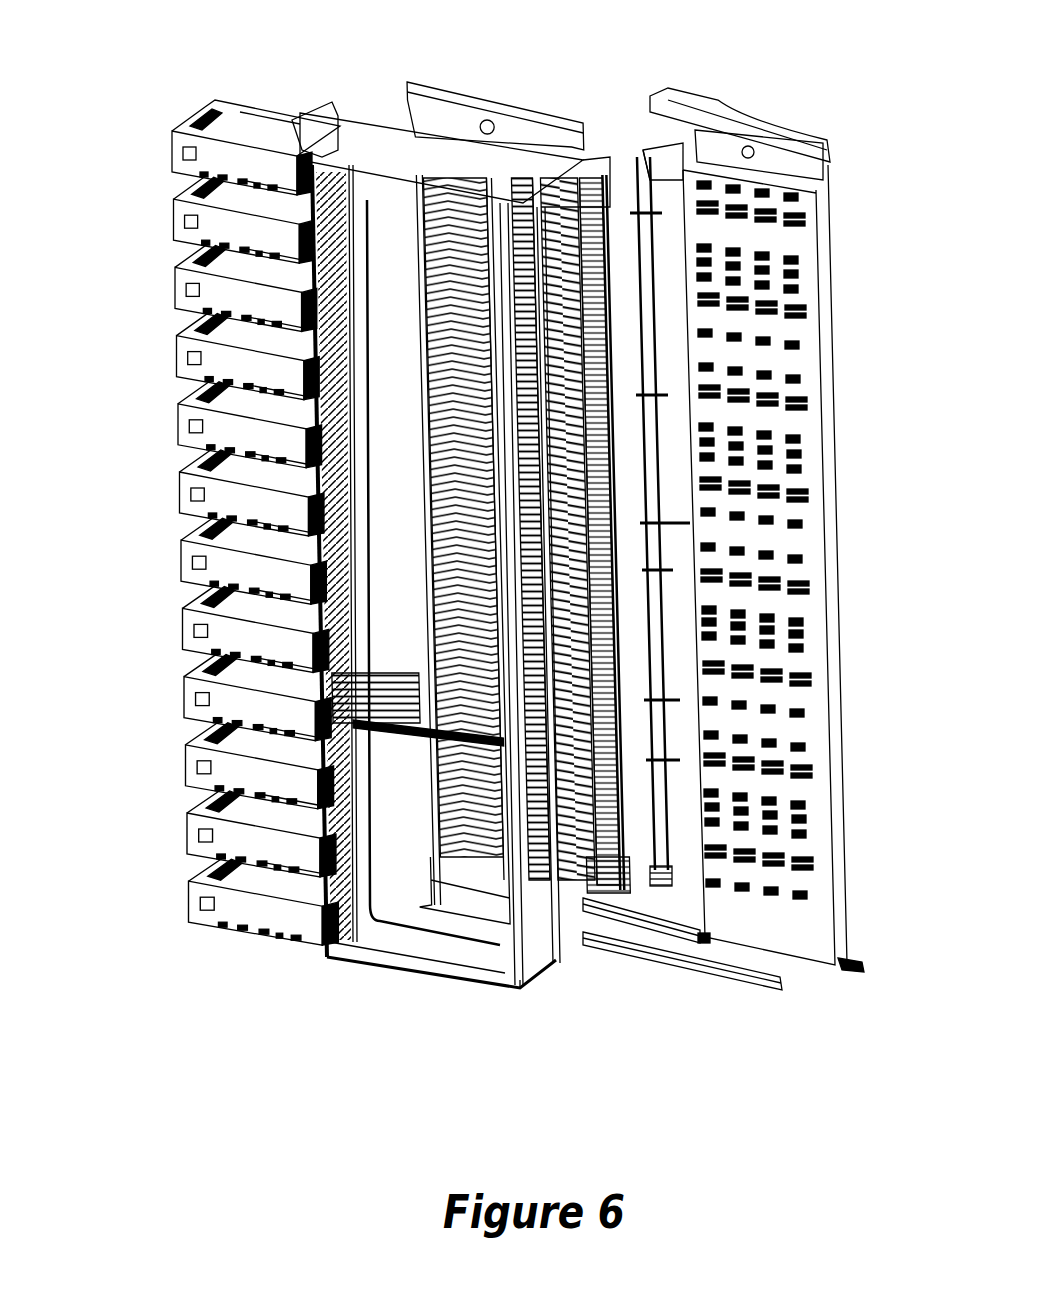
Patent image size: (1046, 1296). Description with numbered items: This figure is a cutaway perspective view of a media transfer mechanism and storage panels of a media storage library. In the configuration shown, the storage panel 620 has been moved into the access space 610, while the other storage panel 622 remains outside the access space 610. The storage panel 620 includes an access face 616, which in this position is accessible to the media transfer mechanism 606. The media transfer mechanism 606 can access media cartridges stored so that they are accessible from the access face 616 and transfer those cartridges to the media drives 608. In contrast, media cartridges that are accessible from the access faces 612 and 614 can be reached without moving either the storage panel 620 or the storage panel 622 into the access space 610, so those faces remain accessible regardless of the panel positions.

The media transfer mechanism 606 is at (380, 745).
The media drives 608 is at (170, 213).
The access space 610 is at (611, 112).
The access face 612 is at (612, 790).
The access face 614 is at (632, 168).
The access face 616 is at (560, 957).
The storage panel 620 is at (438, 750).
The storage panel 622 is at (773, 207).